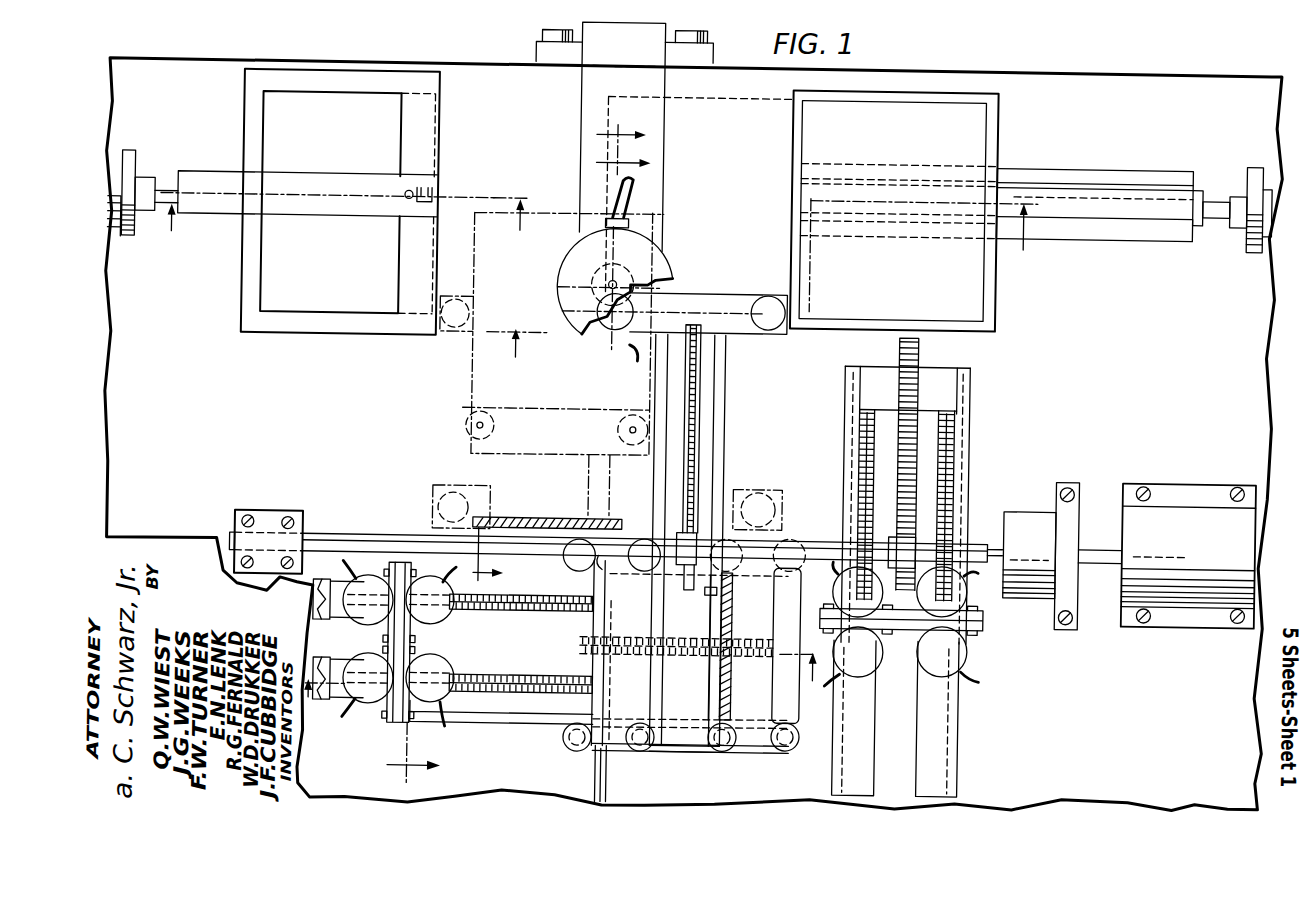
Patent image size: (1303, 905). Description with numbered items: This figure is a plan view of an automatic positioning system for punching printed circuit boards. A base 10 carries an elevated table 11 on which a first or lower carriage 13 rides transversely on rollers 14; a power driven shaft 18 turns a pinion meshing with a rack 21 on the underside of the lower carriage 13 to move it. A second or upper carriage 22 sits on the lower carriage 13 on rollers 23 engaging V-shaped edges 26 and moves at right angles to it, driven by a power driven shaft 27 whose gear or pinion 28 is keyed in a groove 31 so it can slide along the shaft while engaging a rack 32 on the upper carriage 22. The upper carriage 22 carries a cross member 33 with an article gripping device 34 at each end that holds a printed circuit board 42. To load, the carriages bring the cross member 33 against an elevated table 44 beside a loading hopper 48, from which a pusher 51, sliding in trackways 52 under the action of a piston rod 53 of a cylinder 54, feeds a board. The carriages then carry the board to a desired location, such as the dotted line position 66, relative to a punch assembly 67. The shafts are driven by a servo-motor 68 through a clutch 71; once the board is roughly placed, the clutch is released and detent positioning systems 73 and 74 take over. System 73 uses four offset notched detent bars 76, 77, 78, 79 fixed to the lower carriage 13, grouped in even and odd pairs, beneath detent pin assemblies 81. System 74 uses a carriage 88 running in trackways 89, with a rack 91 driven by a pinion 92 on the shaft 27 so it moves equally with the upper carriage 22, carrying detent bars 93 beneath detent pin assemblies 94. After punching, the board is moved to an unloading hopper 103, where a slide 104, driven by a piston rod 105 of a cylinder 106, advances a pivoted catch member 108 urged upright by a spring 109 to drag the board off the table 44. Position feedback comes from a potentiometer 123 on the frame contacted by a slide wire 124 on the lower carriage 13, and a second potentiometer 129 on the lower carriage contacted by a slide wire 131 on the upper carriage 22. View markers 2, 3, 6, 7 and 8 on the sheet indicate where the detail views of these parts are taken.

The section line 2- 2 is at (762, 290).
The section line 3- 3 is at (344, 226).
The section line 6- 6 is at (406, 754).
The section line 7- 7 is at (616, 145).
The section line 8- 8 is at (561, 689).
The base 10 is at (196, 535).
The elevated table 11 is at (514, 726).
The first or lower carriage 13 is at (757, 745).
The rollers 14 is at (793, 546).
The power driven shaft 18 is at (613, 776).
The rack 21 is at (750, 639).
The second or upper carriage 22 is at (705, 444).
The rollers 23 is at (650, 543).
The V-shaped edges 26 is at (724, 407).
The power driven shaft 27 is at (973, 541).
The gear or pinion 28 is at (701, 530).
The groove 31 is at (517, 559).
The rack 32 is at (696, 474).
The cross member 33 is at (716, 296).
The article gripping device 34 is at (606, 337).
The printed circuit board 42 is at (706, 110).
The elevated table 44 is at (477, 71).
The loading hopper 48 is at (991, 122).
The pusher 51 is at (1191, 183).
The trackways 52 is at (1066, 170).
The piston rod 53 is at (1219, 224).
The cylinder 54 is at (1249, 248).
The dotted line position 66 is at (472, 358).
The punch assembly 67 is at (676, 253).
The servo-motor 68 is at (1166, 507).
The clutch 71 is at (1025, 593).
The detent positioning system 73 is at (480, 737).
The detent positioning system 74 is at (986, 420).
The detent bar 76 is at (545, 694).
The detent bar 77 is at (493, 674).
The detent bar 78 is at (550, 613).
The detent bar 79 is at (569, 598).
The detent pin assemblies 81 is at (346, 655).
The carriage 88 is at (916, 410).
The trackways 89 is at (842, 381).
The rack 91 is at (918, 347).
The pinion 92 is at (920, 533).
The detent bars 93 is at (947, 459).
The detent pin assemblies 94 is at (916, 665).
The unloading hopper 103 is at (241, 328).
The slide 104 is at (220, 213).
The piston rod 105 is at (156, 190).
The cylinder 106 is at (126, 168).
The catch member 108 is at (430, 201).
The spring 109 is at (406, 193).
The potentiometer 123 is at (554, 511).
The slide wire 124 is at (600, 558).
The second potentiometer 129 is at (736, 711).
The slide wire 131 is at (708, 594).